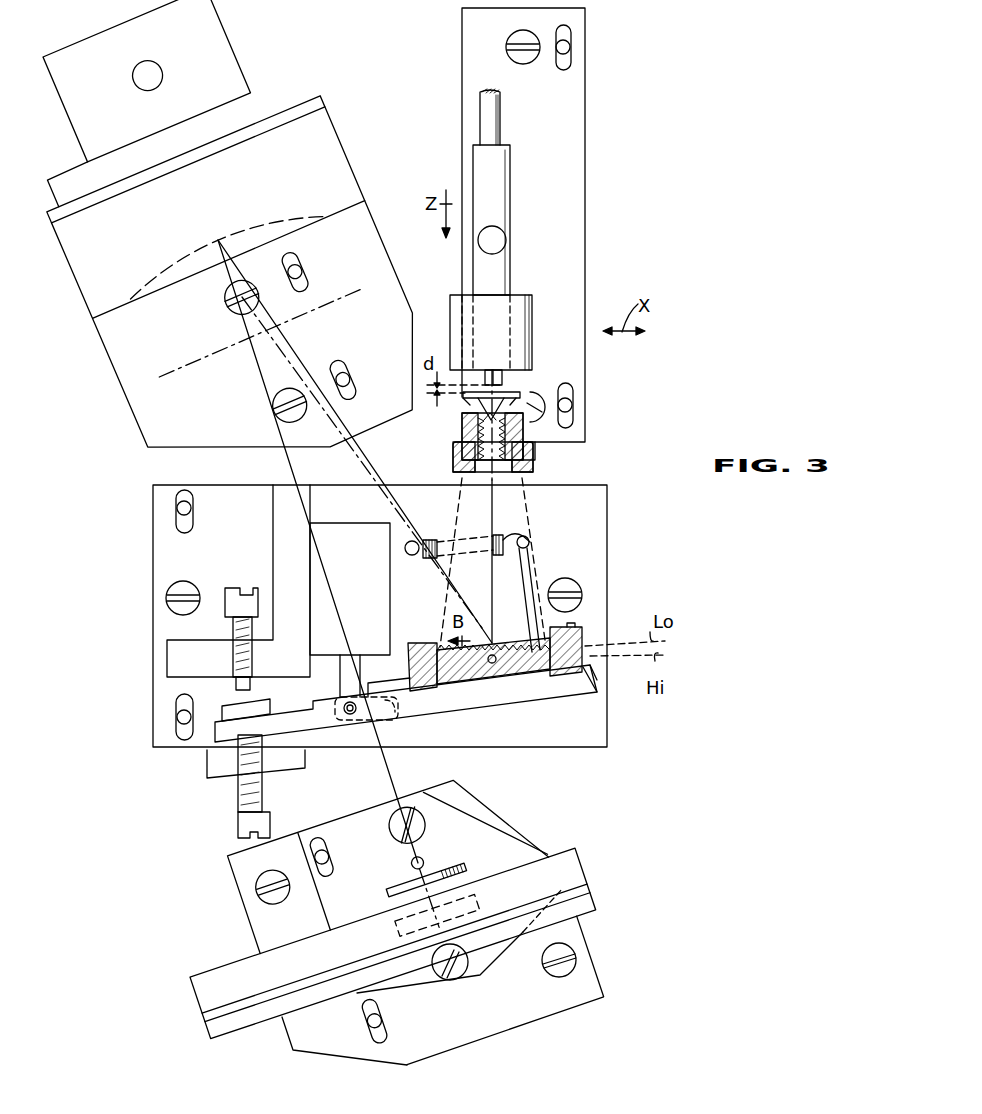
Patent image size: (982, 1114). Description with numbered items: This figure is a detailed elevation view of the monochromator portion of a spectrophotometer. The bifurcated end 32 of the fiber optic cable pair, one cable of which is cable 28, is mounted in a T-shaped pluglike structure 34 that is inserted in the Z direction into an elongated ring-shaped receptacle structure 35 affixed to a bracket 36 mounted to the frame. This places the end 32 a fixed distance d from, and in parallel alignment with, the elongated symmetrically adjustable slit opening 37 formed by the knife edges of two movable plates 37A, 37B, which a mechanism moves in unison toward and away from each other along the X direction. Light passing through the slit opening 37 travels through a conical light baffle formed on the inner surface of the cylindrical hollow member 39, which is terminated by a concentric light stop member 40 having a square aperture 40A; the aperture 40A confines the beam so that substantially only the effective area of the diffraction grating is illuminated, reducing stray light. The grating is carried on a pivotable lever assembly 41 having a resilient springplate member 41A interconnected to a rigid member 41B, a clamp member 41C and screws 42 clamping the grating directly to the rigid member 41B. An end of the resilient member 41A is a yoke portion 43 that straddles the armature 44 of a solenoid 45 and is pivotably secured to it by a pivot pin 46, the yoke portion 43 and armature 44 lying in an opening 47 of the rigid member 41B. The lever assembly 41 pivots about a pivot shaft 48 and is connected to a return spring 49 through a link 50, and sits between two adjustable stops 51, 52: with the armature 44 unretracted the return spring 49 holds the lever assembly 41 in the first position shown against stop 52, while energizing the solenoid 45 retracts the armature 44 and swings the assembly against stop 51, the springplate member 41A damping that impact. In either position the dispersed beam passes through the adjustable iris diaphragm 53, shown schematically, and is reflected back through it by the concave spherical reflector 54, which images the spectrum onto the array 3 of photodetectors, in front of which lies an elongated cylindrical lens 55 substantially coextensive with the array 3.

The array of photodetectors 3 is at (468, 912).
The fiber optic cable 28 is at (503, 119).
The bifurcated end 32 is at (498, 388).
The T-shaped pluglike structure 34 is at (510, 187).
The elongated ring-shaped receptacle structure 35 is at (532, 326).
The bracket 36 is at (586, 173).
The slit opening 37 is at (523, 432).
The movable plate 37A is at (463, 416).
The movable plate 37B is at (506, 396).
The hollow member 39 is at (537, 451).
The light stop member 40 is at (534, 470).
The square aperture 40A is at (487, 469).
The pivotable lever assembly 41 is at (493, 704).
The resilient springplate member 41A is at (397, 690).
The rigid member 41B is at (573, 692).
The clamp member 41C is at (581, 668).
The screws 42 is at (415, 642).
The yoke portion 43 is at (376, 702).
The armature 44 is at (342, 691).
The solenoid 45 is at (385, 522).
The pivot pin 46 is at (349, 716).
The opening 47 is at (397, 723).
The pivot shaft 48 is at (492, 662).
The return spring 49 is at (505, 528).
The link 50 is at (528, 563).
The adjustable stop 51 is at (242, 590).
The adjustable stop 52 is at (262, 801).
The adjustable iris diaphragm 53 is at (322, 290).
The concave spherical reflector 54 is at (262, 211).
The elongated cylindrical lens 55 is at (403, 886).